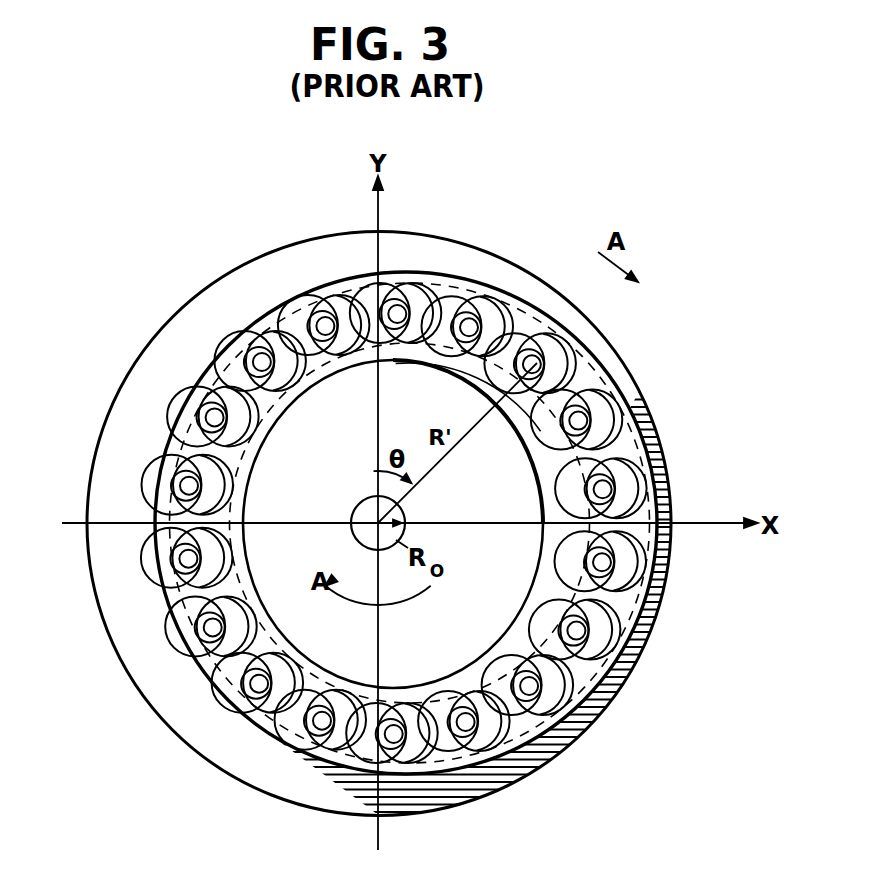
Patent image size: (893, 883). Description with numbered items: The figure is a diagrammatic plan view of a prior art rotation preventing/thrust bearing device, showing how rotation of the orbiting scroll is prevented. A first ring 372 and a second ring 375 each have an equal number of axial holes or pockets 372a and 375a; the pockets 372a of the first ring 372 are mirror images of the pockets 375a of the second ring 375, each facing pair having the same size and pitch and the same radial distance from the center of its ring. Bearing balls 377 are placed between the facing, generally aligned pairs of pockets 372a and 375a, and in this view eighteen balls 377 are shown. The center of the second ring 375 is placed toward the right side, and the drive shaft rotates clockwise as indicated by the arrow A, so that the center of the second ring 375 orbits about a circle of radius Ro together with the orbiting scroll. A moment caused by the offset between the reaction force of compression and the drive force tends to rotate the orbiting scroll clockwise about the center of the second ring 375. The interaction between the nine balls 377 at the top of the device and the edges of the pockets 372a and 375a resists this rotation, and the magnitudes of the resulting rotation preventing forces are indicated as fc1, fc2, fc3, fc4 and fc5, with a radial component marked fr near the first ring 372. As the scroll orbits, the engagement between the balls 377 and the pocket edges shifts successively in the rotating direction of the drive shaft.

The first ring 372 is at (541, 562).
The holes or pockets of first ring 372a is at (550, 497).
The second ring 375 is at (605, 379).
The holes or pockets of second ring 375a is at (642, 488).
The balls 377 is at (608, 560).
The rotation preventing force fc1 is at (362, 302).
The rotation preventing force fc2 is at (323, 310).
The rotation preventing force fc3 is at (447, 362).
The rotation preventing force fc4 is at (548, 370).
The rotation preventing force fc5 is at (590, 480).
The radial force fr is at (432, 384).